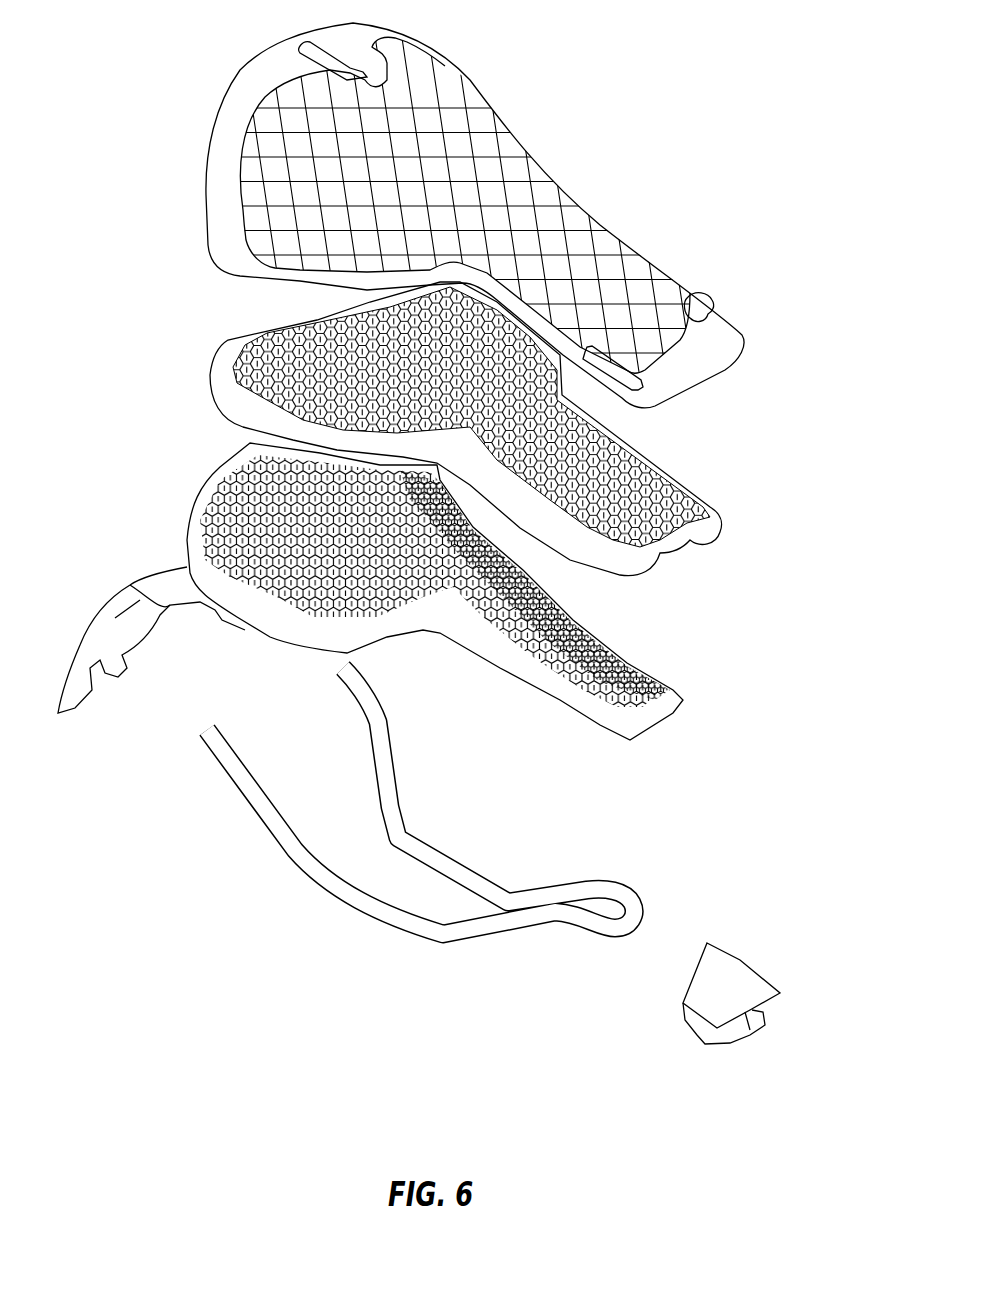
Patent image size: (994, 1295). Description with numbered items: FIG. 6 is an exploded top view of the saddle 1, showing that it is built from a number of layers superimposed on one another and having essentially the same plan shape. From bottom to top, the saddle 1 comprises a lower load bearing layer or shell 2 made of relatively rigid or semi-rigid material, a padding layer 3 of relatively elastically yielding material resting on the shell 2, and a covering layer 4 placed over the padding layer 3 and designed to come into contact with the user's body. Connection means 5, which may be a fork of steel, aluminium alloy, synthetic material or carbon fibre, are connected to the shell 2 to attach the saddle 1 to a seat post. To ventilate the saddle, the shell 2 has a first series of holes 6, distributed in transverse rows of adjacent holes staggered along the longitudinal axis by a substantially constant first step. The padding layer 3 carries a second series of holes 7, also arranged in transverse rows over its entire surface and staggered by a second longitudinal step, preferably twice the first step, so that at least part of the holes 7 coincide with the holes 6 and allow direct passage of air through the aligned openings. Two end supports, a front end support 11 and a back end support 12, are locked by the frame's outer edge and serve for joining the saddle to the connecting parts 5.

The saddle 1 is at (640, 88).
The shell 2 is at (183, 498).
The padding layer 3 is at (680, 550).
The covering layer 4 is at (626, 220).
The connection means 5 is at (268, 854).
The first series of holes 6 is at (505, 635).
The second series of holes 7 is at (718, 516).
The front end support 11 is at (752, 988).
The back end support 12 is at (115, 618).